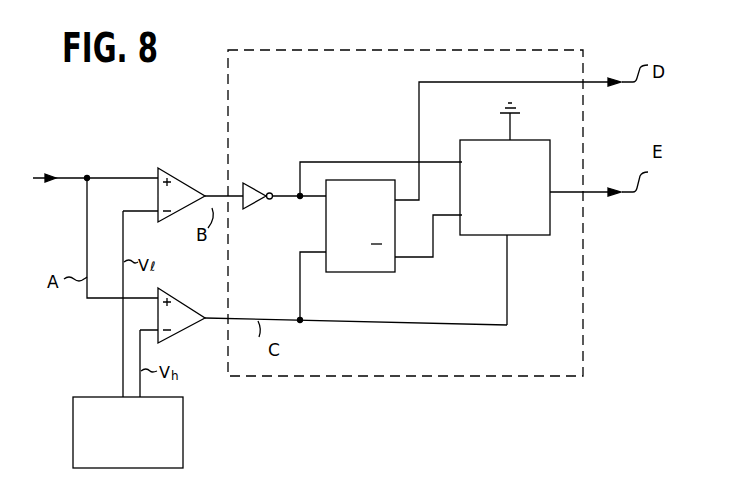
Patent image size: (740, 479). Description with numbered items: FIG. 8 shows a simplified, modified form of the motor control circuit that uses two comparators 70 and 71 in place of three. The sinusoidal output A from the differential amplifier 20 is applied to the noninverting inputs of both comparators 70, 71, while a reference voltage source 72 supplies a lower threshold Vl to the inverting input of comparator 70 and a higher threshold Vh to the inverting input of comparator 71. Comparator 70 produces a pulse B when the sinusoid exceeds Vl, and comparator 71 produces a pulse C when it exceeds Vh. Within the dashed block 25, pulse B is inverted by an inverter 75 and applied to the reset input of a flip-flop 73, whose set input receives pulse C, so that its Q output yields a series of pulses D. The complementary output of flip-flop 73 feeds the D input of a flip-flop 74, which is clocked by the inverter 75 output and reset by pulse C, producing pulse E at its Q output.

The differential amplifier 20 is at (83, 152).
The comparator/latch circuit 25 is at (440, 50).
The comparator 70 is at (174, 178).
The comparator 71 is at (170, 293).
The reference voltage source 72 is at (183, 453).
The flip-flop 73 is at (355, 179).
The flip-flop 74 is at (462, 237).
The inverter 75 is at (248, 182).